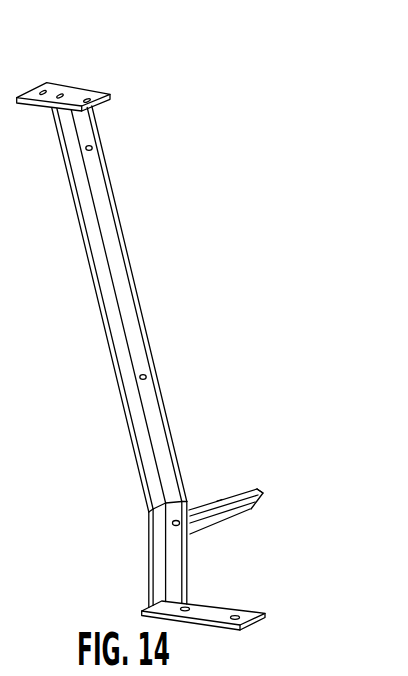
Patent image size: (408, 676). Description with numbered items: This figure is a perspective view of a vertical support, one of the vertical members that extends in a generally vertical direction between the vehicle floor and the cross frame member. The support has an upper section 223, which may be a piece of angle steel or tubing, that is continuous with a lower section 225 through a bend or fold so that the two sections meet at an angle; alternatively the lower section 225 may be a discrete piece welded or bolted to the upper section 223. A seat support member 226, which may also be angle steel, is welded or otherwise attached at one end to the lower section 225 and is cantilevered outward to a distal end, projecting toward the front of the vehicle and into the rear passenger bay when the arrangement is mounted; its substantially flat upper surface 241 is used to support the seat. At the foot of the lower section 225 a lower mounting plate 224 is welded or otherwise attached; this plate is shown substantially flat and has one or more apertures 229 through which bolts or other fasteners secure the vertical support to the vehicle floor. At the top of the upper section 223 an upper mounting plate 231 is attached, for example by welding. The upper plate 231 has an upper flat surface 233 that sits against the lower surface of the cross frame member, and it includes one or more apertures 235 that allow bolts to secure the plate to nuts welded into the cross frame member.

The upper section 223 is at (135, 305).
The lower mounting plate 224 is at (262, 615).
The lower section 225 is at (157, 568).
The seat support member 226 is at (263, 494).
The apertures 229 is at (238, 611).
The upper mounting plate 231 is at (107, 107).
The upper flat surface 233 is at (83, 93).
The apertures 235 is at (55, 88).
The upper surface 241 is at (262, 493).